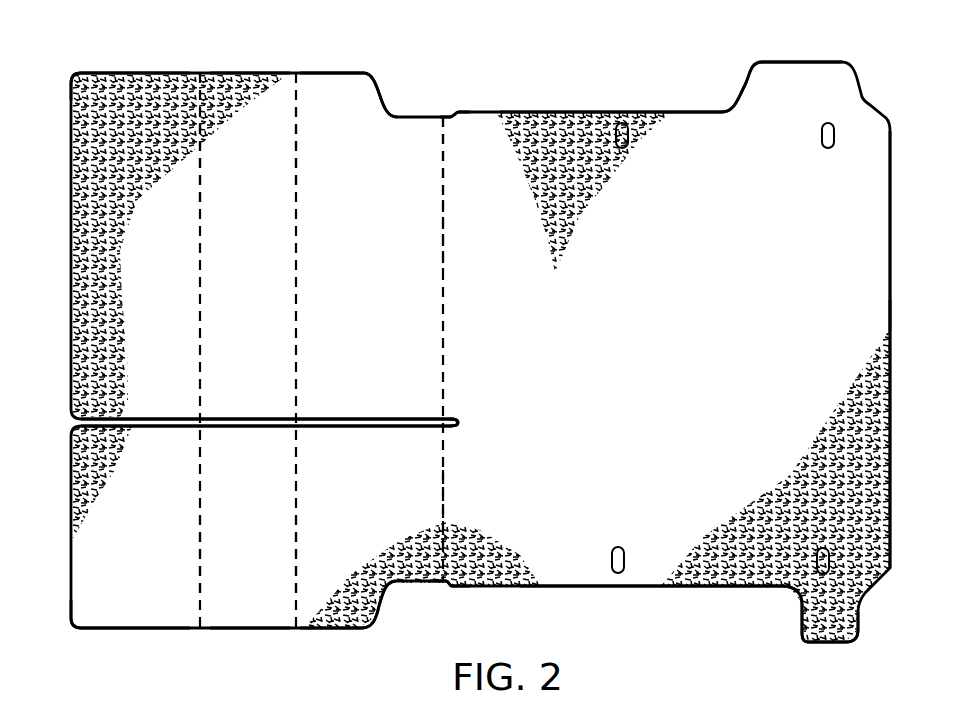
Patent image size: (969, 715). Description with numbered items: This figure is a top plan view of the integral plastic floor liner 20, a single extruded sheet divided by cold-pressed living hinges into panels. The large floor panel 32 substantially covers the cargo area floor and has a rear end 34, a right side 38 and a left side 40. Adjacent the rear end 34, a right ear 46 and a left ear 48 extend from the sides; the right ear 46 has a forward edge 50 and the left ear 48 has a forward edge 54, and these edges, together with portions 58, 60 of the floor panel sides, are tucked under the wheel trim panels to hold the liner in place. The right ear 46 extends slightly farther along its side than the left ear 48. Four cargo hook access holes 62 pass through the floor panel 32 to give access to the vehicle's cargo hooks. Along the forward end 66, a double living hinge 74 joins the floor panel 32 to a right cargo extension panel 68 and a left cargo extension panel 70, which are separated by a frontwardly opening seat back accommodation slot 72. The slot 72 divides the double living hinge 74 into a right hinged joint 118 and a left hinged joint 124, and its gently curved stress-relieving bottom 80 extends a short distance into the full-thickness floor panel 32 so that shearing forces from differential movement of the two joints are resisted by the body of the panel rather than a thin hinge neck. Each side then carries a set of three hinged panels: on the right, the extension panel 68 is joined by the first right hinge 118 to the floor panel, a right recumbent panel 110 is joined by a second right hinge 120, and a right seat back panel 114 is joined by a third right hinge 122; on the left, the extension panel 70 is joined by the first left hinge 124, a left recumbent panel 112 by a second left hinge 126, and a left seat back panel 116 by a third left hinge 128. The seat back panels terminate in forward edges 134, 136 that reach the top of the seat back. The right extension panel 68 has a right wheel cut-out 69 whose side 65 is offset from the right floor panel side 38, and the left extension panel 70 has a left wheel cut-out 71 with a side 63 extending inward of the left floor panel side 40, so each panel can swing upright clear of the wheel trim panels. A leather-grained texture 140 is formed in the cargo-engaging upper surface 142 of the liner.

The floor liner 20 is at (511, 104).
The floor panel 32 is at (661, 334).
The rear end 34 is at (891, 152).
The right side 38 is at (660, 112).
The left side 40 is at (636, 590).
The right ear 46 is at (817, 76).
The left ear 48 is at (822, 636).
The forward edge of right ear 50 is at (746, 88).
The forward edge of left ear 54 is at (792, 600).
The portion of right floor panel side 58 is at (584, 112).
The portion of left floor panel side 60 is at (577, 588).
The cargo hook access holes 62 is at (824, 148).
The side of left wheel cut-out 63 is at (448, 588).
The side of right wheel cut-out 65 is at (456, 115).
The forward end 66 is at (444, 240).
The right cargo extension panel 68 is at (347, 245).
The right wheel cut-out 69 is at (388, 112).
The left cargo extension panel 70 is at (352, 488).
The left wheel cut-out 71 is at (392, 584).
The seat back accommodation slot 72 is at (347, 428).
The double living hinge 74 is at (297, 308).
The stress-relieving bottom 80 is at (466, 427).
The right recumbent panel 110 is at (261, 245).
The left recumbent panel 112 is at (263, 488).
The right seat back panel 114 is at (172, 243).
The left seat back panel 116 is at (151, 488).
The first right hinge 118 is at (444, 200).
The second right hinge 120 is at (297, 152).
The third right hinge 122 is at (201, 170).
The first left hinge 124 is at (444, 510).
The second left hinge 126 is at (297, 555).
The third left hinge 128 is at (201, 550).
The right seat back panel forward edge 134 is at (70, 123).
The left seat back panel forward edge 136 is at (69, 573).
The leather-grained texture 140 is at (170, 85).
The cargo-engaging upper surface 142 is at (221, 80).